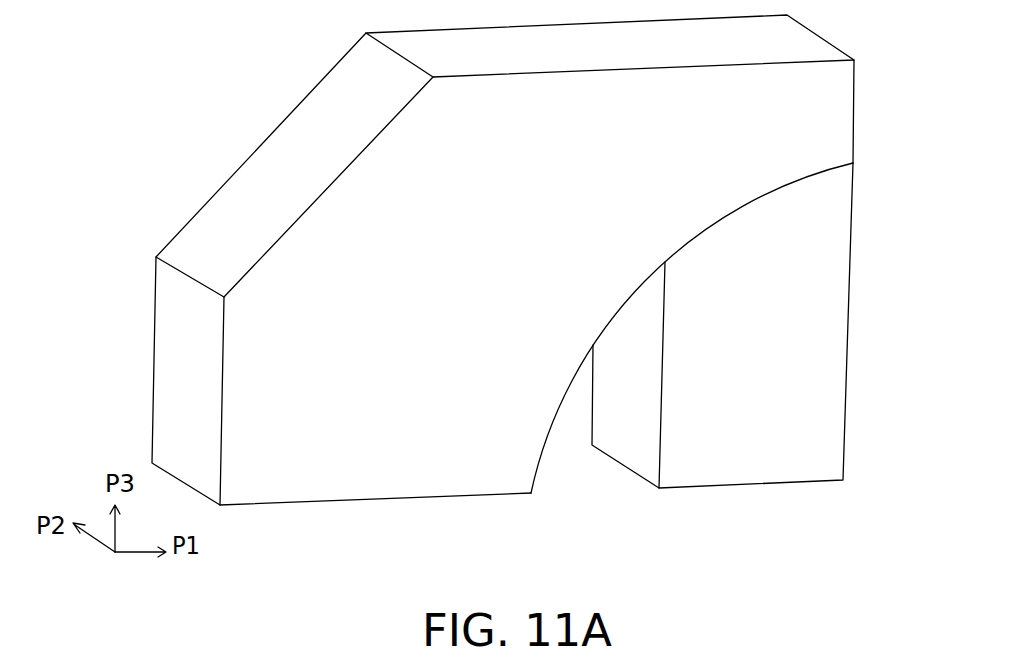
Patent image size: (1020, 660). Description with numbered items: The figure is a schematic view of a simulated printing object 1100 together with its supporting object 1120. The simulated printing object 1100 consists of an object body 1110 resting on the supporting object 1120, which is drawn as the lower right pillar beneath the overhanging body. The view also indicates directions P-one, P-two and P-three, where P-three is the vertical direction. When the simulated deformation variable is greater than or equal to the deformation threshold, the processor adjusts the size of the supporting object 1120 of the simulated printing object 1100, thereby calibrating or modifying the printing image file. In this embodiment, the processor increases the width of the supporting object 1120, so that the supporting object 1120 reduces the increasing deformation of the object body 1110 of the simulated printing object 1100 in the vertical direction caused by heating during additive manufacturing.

The simulated printing object 1100 is at (546, 290).
The object body 1110 is at (838, 113).
The supporting object 1120 is at (830, 353).